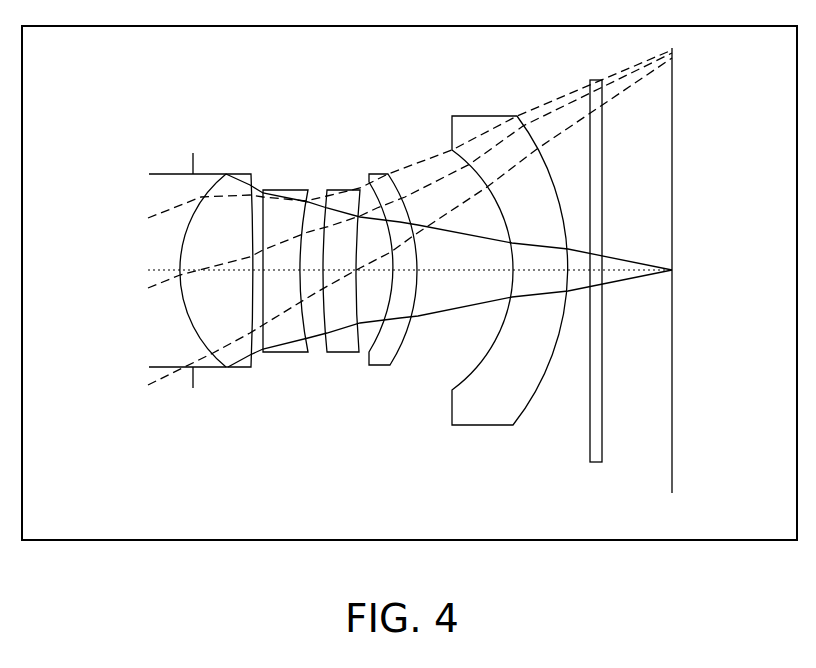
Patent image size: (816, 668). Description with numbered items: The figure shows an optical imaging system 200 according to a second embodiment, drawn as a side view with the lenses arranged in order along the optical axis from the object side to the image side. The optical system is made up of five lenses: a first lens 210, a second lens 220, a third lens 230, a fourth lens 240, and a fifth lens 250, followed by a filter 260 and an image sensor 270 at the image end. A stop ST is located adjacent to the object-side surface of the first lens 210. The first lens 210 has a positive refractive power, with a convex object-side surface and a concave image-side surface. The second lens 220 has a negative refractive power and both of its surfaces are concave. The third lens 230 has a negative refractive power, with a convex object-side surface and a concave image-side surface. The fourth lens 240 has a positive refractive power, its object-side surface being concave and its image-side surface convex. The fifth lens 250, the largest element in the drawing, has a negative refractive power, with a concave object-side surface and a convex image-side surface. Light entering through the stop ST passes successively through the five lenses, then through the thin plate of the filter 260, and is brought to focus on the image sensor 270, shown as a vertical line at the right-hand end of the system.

The optical imaging system 200 is at (346, 113).
The stop ST is at (190, 385).
The first lens 210 is at (238, 368).
The second lens 220 is at (287, 352).
The third lens 230 is at (345, 352).
The fourth lens 240 is at (377, 368).
The fifth lens 250 is at (483, 425).
The filter 260 is at (590, 434).
The image sensor 270 is at (672, 420).